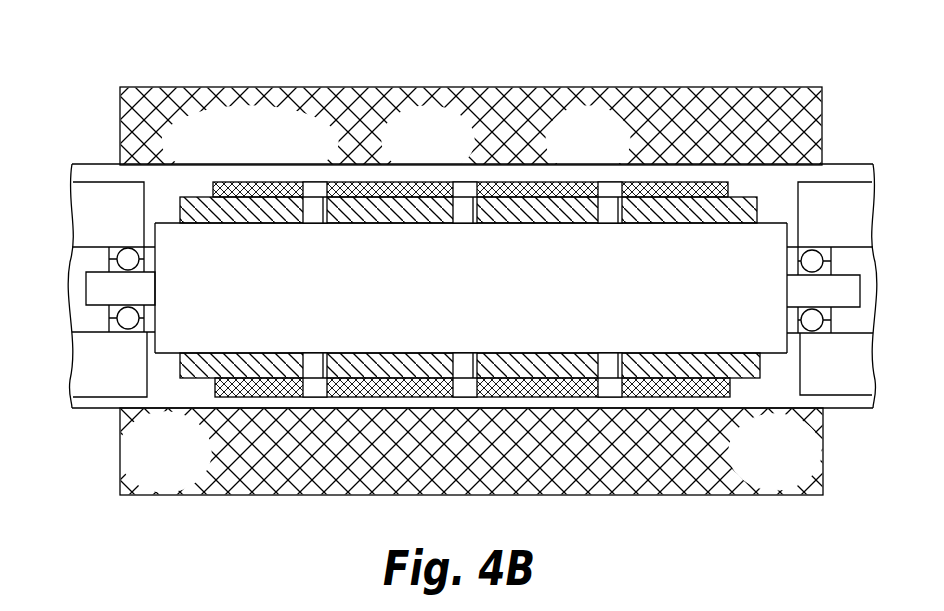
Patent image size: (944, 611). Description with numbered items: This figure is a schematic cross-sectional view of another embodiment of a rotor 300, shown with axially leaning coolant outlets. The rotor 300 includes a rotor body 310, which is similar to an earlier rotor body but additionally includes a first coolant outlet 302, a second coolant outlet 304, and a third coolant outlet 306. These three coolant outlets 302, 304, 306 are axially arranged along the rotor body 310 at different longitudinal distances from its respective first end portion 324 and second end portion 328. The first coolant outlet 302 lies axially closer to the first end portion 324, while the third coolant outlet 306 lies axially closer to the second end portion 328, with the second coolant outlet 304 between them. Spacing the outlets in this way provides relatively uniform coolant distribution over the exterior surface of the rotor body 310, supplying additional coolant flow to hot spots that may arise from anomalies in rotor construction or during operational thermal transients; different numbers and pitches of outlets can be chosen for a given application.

The rotor 300 is at (456, 252).
The first coolant outlet 302 is at (315, 192).
The second coolant outlet 304 is at (465, 192).
The third coolant outlet 306 is at (613, 192).
The rotor body 310 is at (190, 194).
The first end portion 324 is at (167, 303).
The second end portion 328 is at (772, 317).